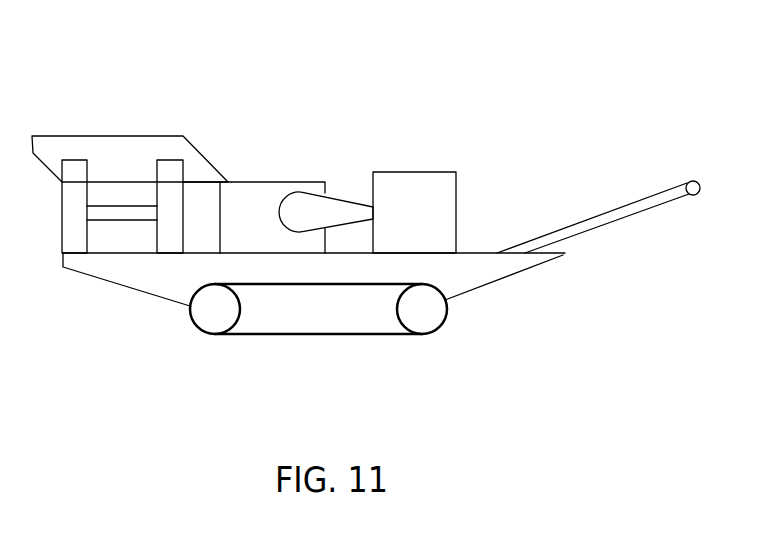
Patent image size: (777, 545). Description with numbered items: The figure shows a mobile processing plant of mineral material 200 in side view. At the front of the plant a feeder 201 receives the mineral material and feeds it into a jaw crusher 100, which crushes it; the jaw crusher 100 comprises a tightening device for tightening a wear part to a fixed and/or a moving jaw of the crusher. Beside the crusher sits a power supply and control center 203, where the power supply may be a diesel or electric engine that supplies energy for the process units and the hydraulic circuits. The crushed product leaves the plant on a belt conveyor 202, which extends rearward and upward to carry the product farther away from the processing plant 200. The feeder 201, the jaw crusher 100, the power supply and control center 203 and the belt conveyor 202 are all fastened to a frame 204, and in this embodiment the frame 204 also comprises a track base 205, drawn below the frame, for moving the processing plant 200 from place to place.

The mobile processing plant of mineral material 200 is at (495, 67).
The feeder 201 is at (108, 148).
The jaw crusher 100 is at (258, 195).
The power supply and control center 203 is at (397, 187).
The belt conveyor 202 is at (600, 222).
The frame 204 is at (142, 277).
The track base 205 is at (212, 332).